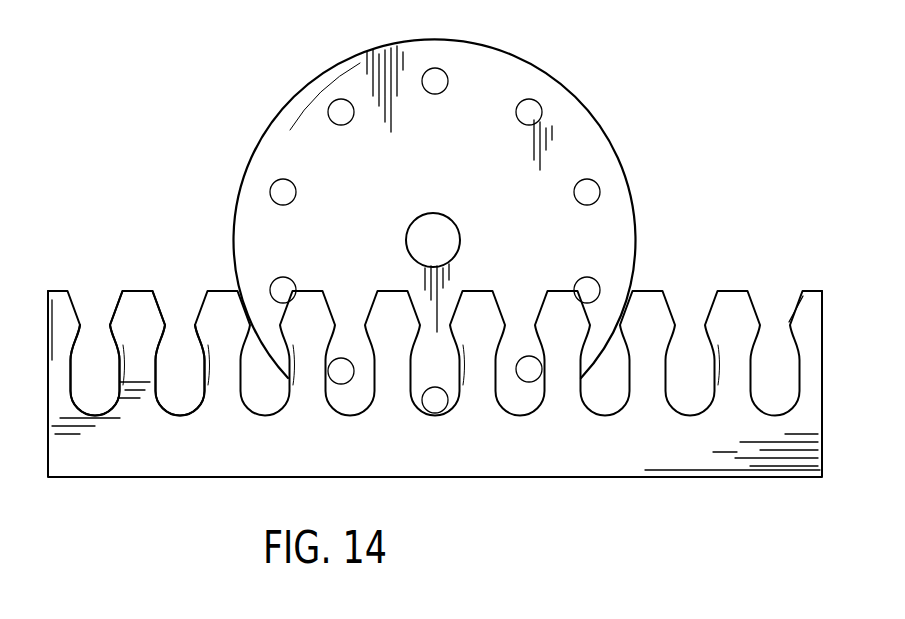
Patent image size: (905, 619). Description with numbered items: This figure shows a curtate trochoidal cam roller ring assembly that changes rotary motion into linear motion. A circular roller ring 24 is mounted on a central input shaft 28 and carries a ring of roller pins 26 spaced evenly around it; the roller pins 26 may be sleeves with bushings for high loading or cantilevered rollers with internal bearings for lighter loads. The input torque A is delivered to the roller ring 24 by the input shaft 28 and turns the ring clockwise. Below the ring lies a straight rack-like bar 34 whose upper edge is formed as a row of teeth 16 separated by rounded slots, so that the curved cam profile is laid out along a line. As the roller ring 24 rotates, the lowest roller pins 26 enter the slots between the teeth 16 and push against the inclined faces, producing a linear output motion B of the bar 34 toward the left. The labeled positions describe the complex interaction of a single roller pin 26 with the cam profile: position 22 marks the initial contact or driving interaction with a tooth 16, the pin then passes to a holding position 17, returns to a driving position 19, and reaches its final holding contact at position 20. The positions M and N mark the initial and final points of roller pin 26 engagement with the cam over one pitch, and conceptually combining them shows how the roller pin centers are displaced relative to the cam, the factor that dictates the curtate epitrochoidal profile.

The teeth of rack 16 is at (139, 293).
The holding position 17 is at (117, 365).
The driving position 19 is at (182, 366).
The cam position 20 is at (116, 310).
The cam position 22 is at (158, 311).
The roller ring 24 is at (540, 177).
The roller pin 26 is at (524, 99).
The input shaft 28 is at (423, 245).
The rack bar 34 is at (720, 440).
The input torque A is at (470, 143).
The output torque B is at (172, 460).
The final position N is at (285, 324).
The initial position M is at (577, 313).